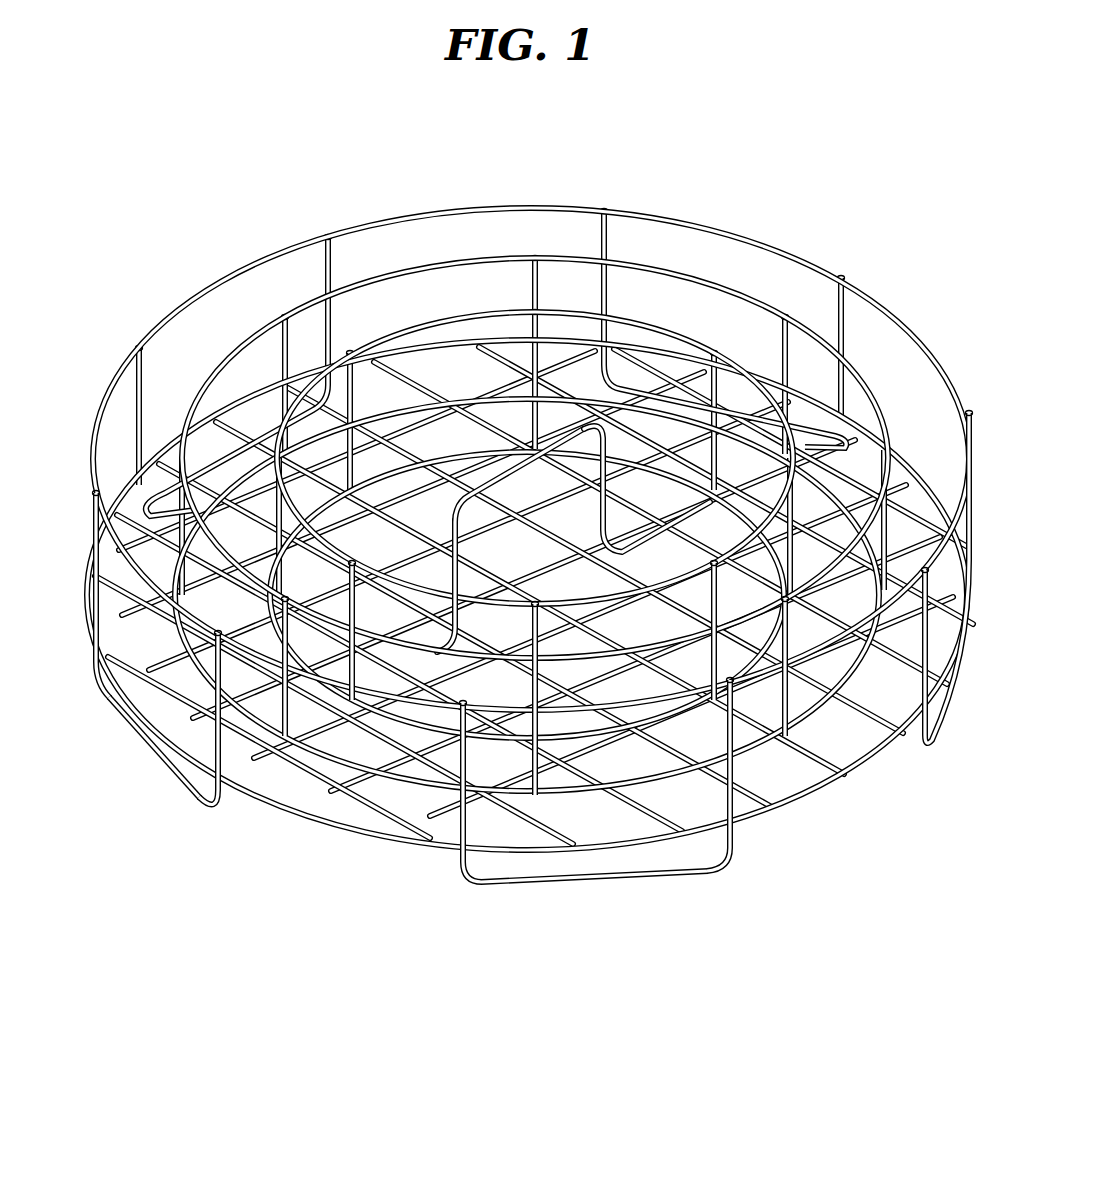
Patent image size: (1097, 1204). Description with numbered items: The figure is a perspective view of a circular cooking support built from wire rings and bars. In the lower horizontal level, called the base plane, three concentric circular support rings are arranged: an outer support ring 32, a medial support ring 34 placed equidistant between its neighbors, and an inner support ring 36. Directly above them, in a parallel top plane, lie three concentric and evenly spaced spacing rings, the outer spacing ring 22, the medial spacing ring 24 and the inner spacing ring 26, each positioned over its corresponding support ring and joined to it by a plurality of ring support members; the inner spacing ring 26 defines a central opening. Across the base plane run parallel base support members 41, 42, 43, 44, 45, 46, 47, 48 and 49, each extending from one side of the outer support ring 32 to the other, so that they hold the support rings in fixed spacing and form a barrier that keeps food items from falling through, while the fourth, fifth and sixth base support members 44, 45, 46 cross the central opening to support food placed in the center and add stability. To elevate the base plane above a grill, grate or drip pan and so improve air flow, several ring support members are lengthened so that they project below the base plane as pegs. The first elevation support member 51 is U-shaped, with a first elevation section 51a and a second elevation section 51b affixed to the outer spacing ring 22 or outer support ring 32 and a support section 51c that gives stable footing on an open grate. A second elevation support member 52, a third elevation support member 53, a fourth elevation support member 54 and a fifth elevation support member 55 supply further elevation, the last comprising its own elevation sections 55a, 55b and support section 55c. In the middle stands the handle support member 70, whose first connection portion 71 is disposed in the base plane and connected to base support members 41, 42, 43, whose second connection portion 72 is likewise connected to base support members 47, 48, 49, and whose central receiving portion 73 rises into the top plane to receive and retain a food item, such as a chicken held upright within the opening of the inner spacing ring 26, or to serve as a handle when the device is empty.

The outer spacing ring 22 is at (363, 213).
The medial spacing ring 24 is at (637, 265).
The inner spacing ring 26 is at (667, 327).
The outer support ring 32 is at (300, 815).
The medial support ring 34 is at (315, 762).
The inner support ring 36 is at (388, 778).
The first base support member 41 is at (415, 833).
The second base support member 42 is at (540, 826).
The third base support member 43 is at (673, 828).
The fourth base support member 44 is at (777, 815).
The fifth base support member 45 is at (800, 762).
The sixth base support member 46 is at (847, 705).
The seventh base support member 47 is at (857, 660).
The eighth base support member 48 is at (908, 592).
The ninth base support member 49 is at (913, 510).
The first elevation support member 51 is at (641, 864).
The first elevation section 51a is at (466, 855).
The second elevation section 51b is at (736, 775).
The support section 51c is at (650, 879).
The second elevation support member 52 is at (938, 748).
The third elevation support member 53 is at (600, 240).
The fourth elevation support member 54 is at (327, 277).
The fifth elevation support member 55 is at (139, 711).
The first elevation section 55a is at (100, 688).
The second elevation section 55b is at (200, 686).
The support section 55c is at (143, 742).
The handle support member 70 is at (556, 555).
The first connection portion 71 is at (440, 657).
The second connection portion 72 is at (690, 500).
The central receiving portion 73 is at (520, 467).